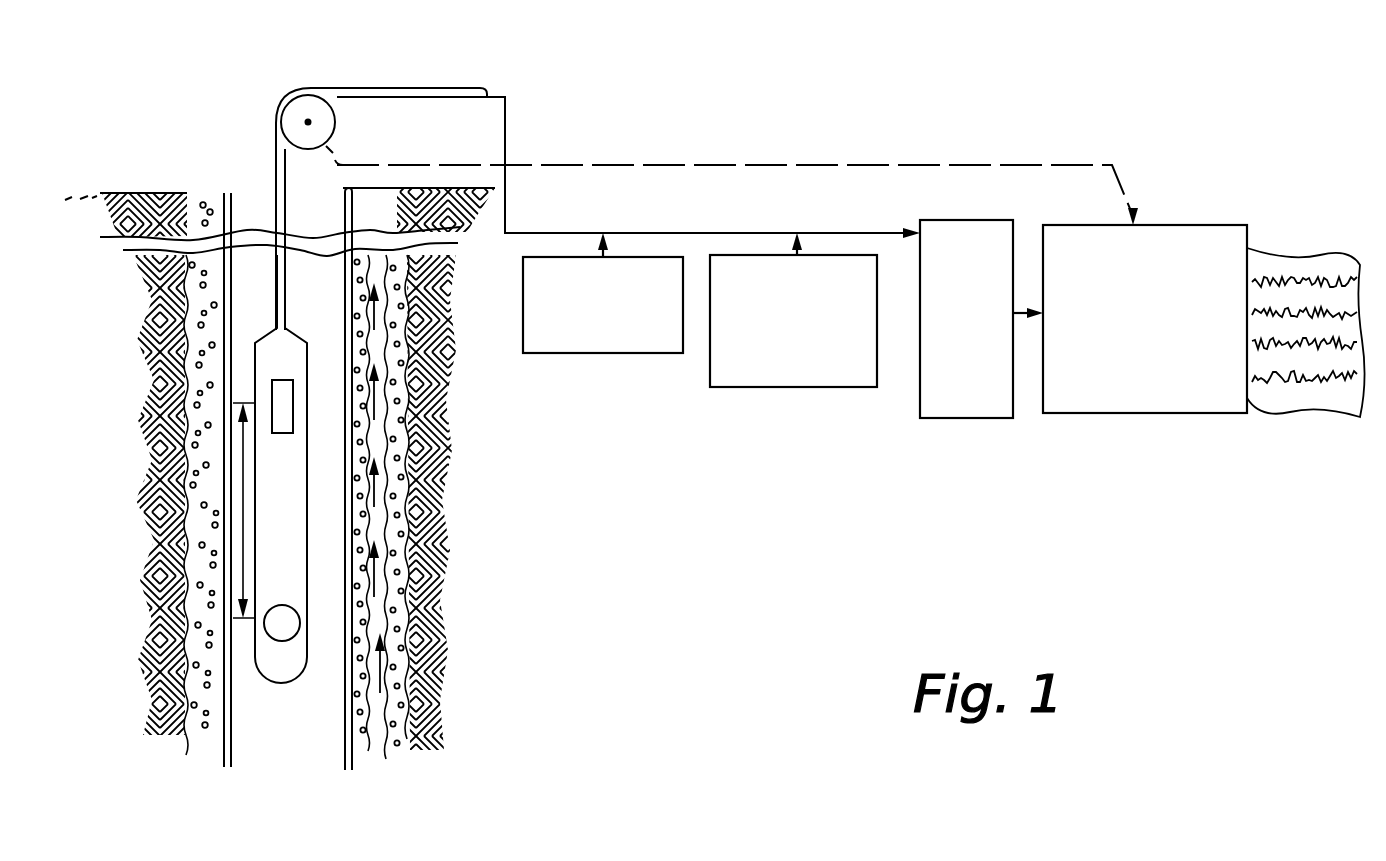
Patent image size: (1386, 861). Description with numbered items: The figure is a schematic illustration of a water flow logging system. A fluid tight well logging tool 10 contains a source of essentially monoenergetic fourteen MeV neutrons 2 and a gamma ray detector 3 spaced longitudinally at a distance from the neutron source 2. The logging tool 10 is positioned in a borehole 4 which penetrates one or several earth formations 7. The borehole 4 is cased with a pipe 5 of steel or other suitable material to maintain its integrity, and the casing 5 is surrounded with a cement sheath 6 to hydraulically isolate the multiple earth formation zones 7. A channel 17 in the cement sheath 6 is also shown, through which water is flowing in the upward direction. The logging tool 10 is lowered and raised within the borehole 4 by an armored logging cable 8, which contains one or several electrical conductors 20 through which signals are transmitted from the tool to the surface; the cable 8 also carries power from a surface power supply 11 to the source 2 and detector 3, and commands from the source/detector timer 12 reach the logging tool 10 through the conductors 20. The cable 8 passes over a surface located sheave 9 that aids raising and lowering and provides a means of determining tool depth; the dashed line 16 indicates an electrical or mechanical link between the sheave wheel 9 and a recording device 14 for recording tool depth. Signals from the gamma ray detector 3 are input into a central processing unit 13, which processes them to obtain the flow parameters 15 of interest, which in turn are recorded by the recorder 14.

The neutron source 2 is at (283, 623).
The gamma ray detector 3 is at (280, 380).
The borehole 4 is at (265, 718).
The casing 5 is at (353, 527).
The cement sheath 6 is at (430, 415).
The earth formations 7 is at (167, 403).
The armored logging cable 8 is at (274, 163).
The sheave wheel 9 is at (298, 100).
The well logging tool 10 is at (256, 372).
The surface power supply 11 is at (572, 353).
The source/detector timer 12 is at (727, 378).
The central processing unit (CPU) 13 is at (917, 400).
The recorder 14 is at (1087, 400).
The flow parameters 15 is at (1287, 257).
The dashed line 16 is at (652, 163).
The channel 17 is at (383, 507).
The electrical conductors 20 is at (512, 122).